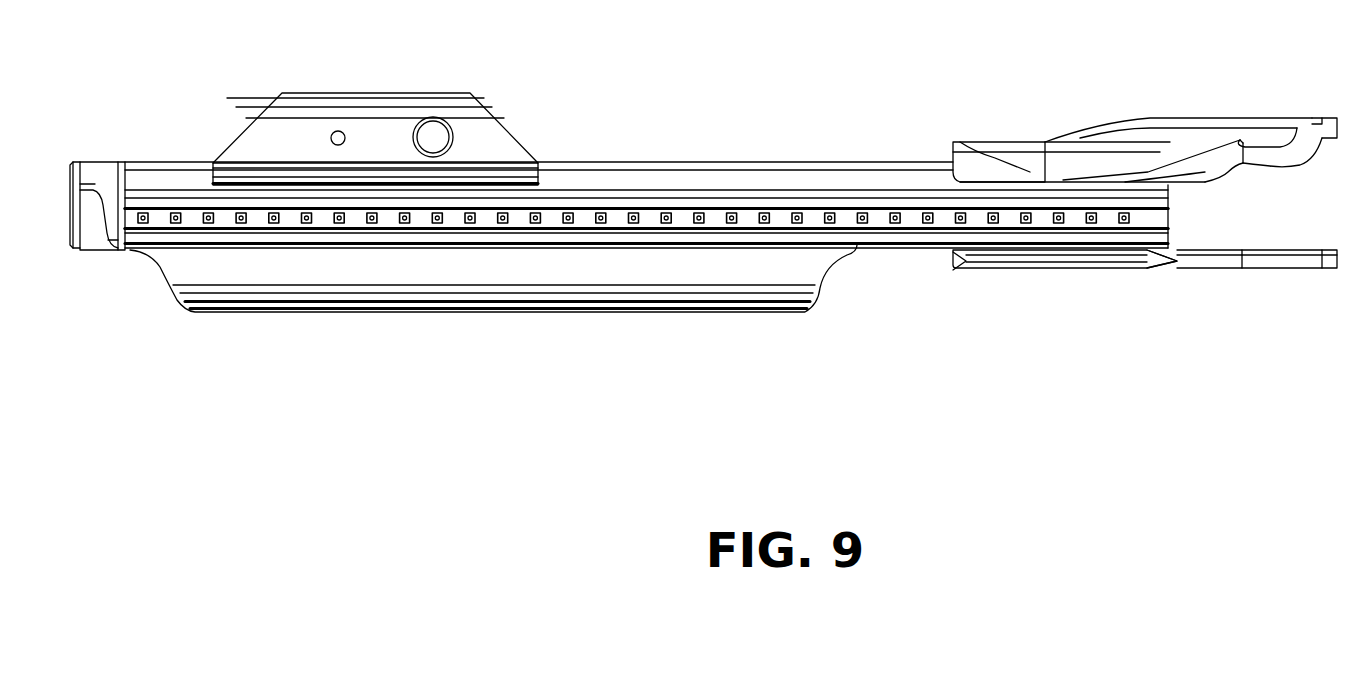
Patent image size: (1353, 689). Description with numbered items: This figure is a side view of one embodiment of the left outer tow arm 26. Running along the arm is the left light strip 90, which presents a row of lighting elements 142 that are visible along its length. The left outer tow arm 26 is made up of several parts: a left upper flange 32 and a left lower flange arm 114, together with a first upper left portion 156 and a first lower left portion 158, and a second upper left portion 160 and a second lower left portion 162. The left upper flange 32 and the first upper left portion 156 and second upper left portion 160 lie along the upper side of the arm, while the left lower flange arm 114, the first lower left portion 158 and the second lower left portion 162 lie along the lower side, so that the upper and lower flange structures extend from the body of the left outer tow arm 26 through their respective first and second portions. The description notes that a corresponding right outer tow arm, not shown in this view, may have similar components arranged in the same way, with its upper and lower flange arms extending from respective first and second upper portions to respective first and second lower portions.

The left outer tow arm 26 is at (693, 178).
The left light strip 90 is at (192, 218).
The lighting elements 142 is at (371, 225).
The left upper flange 32 is at (1005, 152).
The first upper left portion 156 is at (1140, 150).
The second upper left portion 160 is at (1303, 118).
The left lower flange arm 114 is at (1002, 270).
The first lower left portion 158 is at (1137, 270).
The second lower left portion 162 is at (1287, 270).